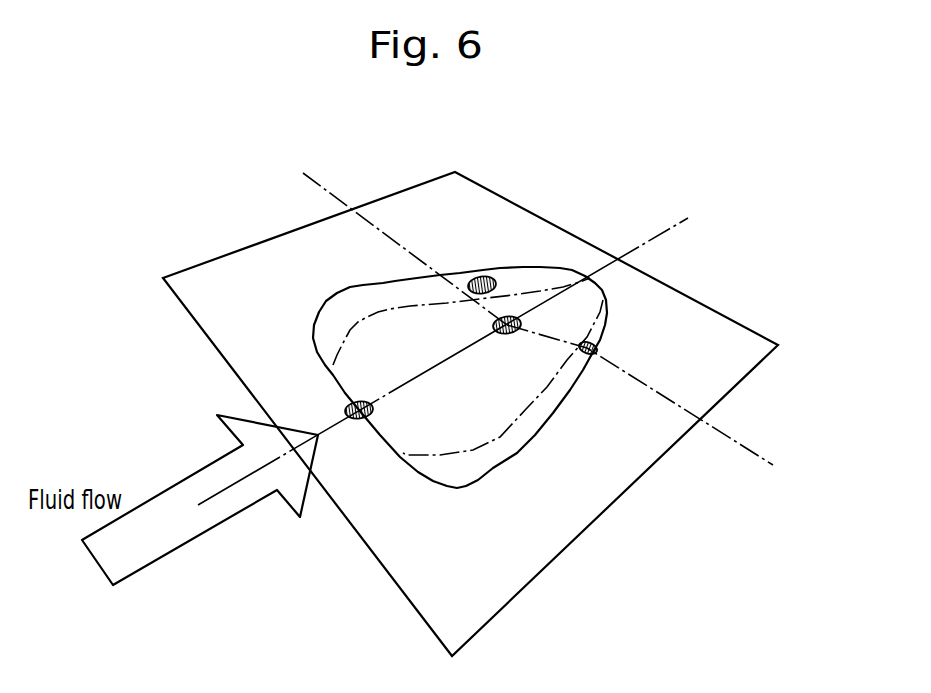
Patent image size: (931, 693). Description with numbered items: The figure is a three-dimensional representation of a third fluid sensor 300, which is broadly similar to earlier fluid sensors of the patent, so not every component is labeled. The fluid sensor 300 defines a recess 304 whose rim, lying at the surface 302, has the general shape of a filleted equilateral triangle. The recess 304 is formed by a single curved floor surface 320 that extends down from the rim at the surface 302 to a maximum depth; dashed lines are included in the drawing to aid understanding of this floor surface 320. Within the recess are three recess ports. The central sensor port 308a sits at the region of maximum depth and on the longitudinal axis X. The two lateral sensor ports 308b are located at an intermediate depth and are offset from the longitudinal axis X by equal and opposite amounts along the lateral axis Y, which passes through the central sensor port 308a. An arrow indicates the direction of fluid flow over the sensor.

The third fluid sensor 300 is at (577, 175).
The surface 302 is at (460, 583).
The recess 304 is at (343, 281).
The central sensor port 308a is at (507, 333).
The lateral sensor ports 308b is at (482, 278).
The curved floor surface 320 is at (363, 367).